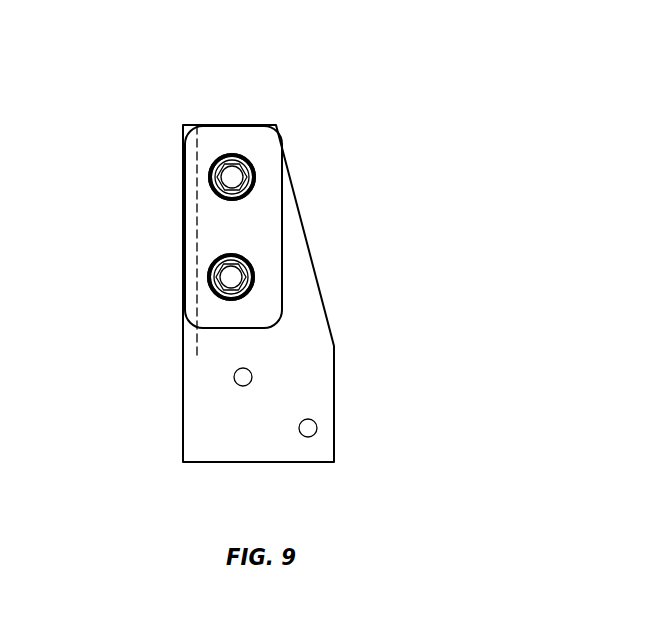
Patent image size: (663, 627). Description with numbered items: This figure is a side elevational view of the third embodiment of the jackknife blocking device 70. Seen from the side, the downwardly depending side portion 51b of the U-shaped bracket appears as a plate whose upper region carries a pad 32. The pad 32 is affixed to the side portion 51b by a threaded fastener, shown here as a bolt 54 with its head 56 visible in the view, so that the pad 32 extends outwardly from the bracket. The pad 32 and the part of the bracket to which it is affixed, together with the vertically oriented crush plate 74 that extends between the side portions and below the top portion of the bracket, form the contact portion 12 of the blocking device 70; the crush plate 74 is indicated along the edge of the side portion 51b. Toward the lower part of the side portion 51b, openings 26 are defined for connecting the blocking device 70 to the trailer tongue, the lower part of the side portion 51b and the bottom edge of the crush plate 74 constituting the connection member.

The blocking device 70 is at (413, 107).
The contact portion 12 is at (133, 207).
The crush plate 74 is at (193, 202).
The bolt 54 is at (157, 248).
The nut / washer 56 is at (158, 322).
The pad 32 is at (280, 227).
The side portion 51b is at (293, 293).
The opening 26 is at (261, 403).